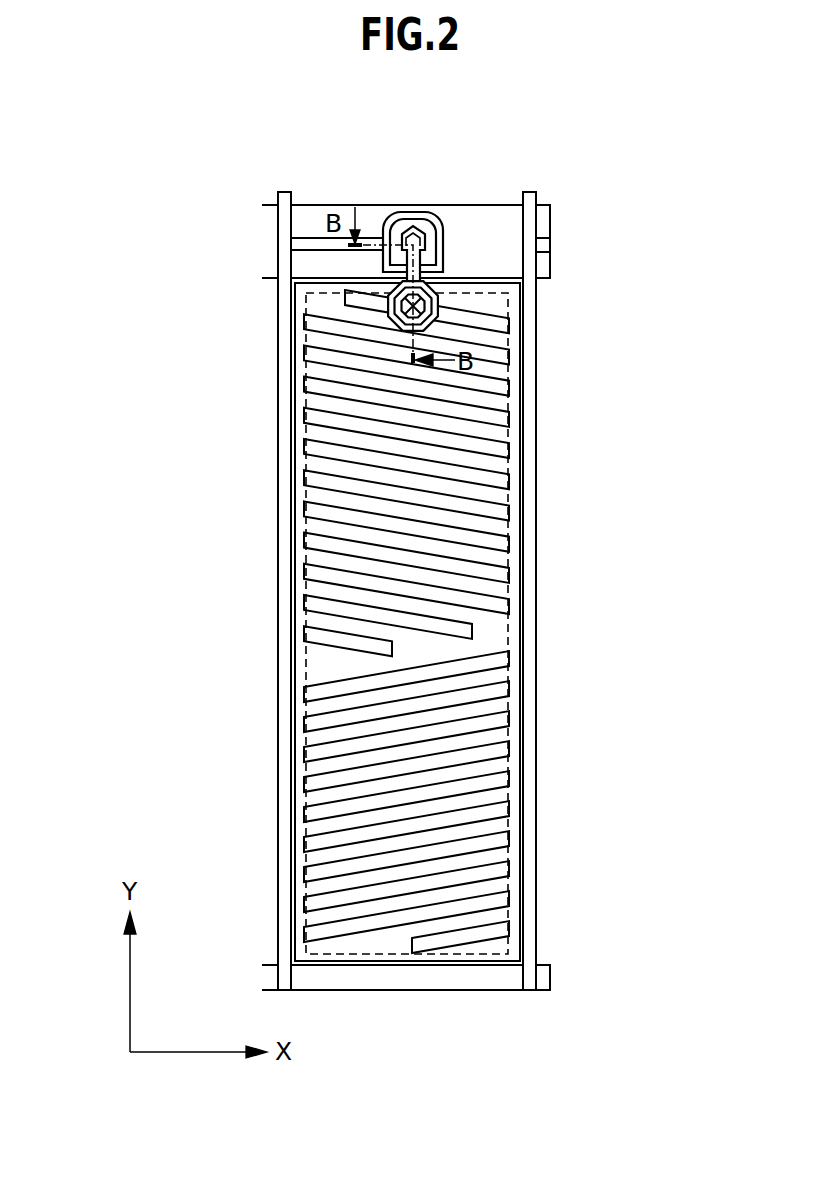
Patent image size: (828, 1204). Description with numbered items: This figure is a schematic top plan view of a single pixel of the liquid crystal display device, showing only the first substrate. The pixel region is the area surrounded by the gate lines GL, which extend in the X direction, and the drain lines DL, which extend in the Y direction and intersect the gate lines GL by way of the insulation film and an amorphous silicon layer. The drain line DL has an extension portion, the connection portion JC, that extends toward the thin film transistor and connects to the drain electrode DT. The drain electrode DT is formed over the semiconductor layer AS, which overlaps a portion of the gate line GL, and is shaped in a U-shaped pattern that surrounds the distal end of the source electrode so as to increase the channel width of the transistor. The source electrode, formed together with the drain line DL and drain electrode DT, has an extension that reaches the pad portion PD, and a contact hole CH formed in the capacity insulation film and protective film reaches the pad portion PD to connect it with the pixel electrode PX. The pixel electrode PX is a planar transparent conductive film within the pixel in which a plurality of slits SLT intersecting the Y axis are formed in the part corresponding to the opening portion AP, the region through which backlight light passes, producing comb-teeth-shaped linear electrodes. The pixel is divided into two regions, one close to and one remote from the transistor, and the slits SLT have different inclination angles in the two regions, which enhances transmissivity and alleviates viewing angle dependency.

The gate line GL is at (262, 246).
The drain line DL is at (283, 533).
The connection portion JC is at (306, 237).
The semiconductor layer AS is at (413, 213).
The drain electrode DT is at (430, 229).
The pad portion PD is at (438, 297).
The contact hole CH is at (432, 317).
The slit SLT is at (317, 382).
The pixel electrode PX is at (347, 622).
The opening portion AP is at (365, 955).